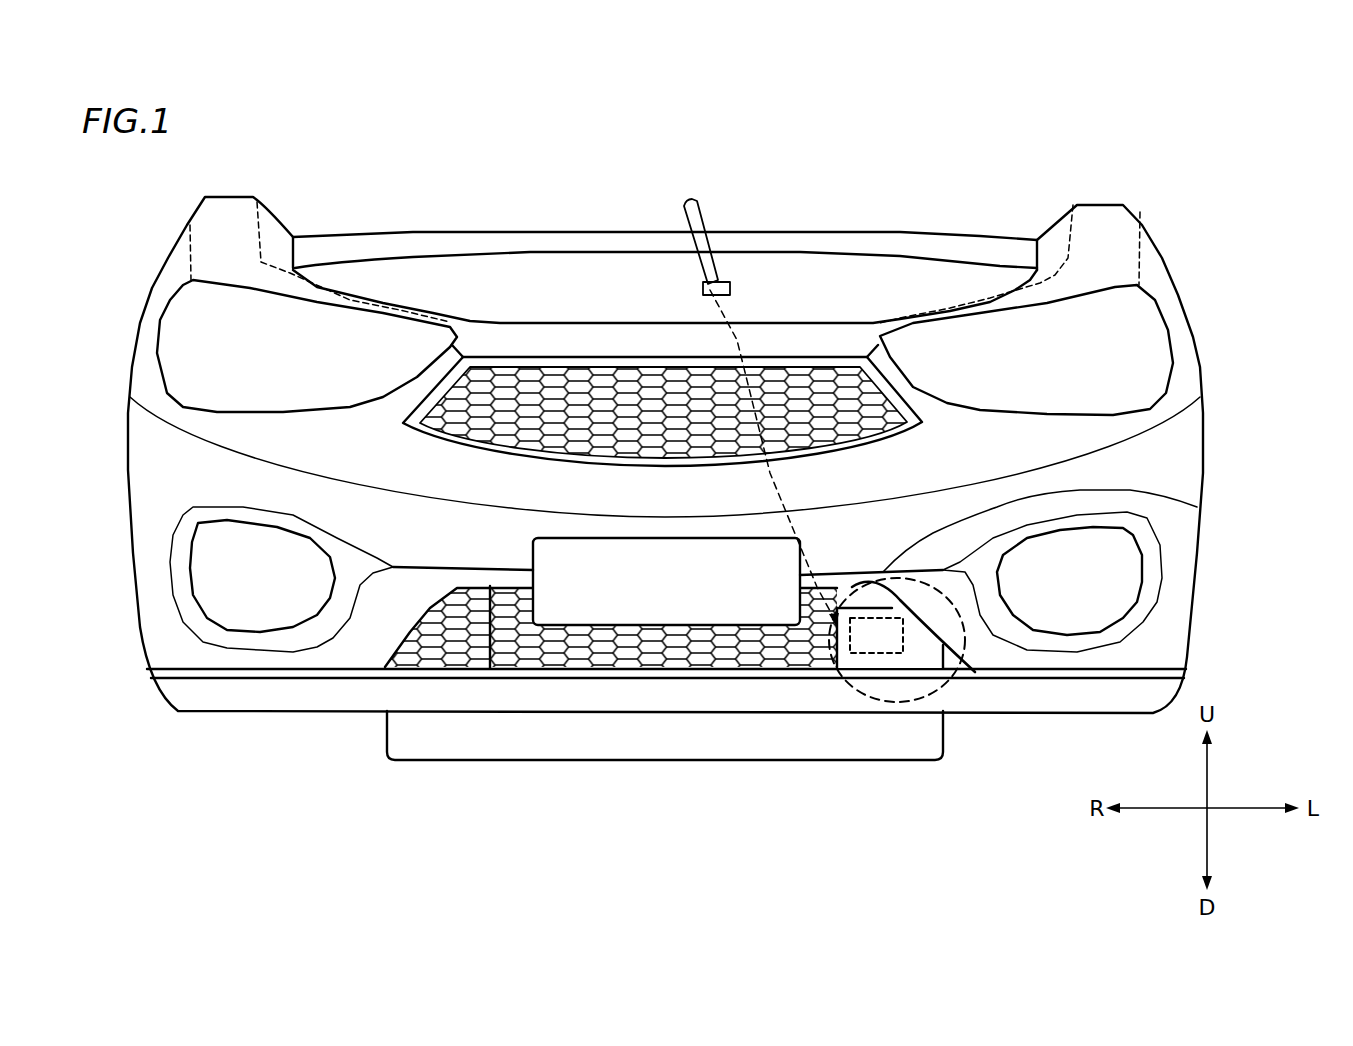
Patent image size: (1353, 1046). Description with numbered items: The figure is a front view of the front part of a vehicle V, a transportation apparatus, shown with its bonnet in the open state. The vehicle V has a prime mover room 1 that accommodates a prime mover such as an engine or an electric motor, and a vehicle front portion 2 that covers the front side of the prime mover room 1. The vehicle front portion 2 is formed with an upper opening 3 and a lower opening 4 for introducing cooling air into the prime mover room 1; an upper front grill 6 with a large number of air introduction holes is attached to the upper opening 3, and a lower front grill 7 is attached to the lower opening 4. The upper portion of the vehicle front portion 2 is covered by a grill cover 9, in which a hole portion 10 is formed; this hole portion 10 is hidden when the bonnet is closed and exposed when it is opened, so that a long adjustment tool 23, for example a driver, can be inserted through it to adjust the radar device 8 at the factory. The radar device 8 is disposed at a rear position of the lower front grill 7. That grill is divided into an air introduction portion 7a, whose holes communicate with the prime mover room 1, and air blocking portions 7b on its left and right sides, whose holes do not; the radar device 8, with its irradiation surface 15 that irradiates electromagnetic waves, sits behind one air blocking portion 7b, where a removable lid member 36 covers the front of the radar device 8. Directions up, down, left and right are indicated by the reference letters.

The prime mover room 1 is at (833, 243).
The vehicle front portion 2 is at (1183, 466).
The upper opening 3 is at (545, 393).
The lower opening 4 is at (548, 650).
The upper front grill 6 is at (485, 410).
The lower front grill 7 is at (625, 657).
The air introduction portion 7a is at (668, 695).
The air blocking portion 7b is at (427, 650).
The radar device 8 is at (890, 655).
The grill cover 9 is at (863, 287).
The hole portion 10 is at (733, 282).
The irradiation surface 15 is at (893, 735).
The adjustment tool 23 is at (700, 213).
The lid member 36 is at (930, 660).
The vehicle V is at (1085, 168).